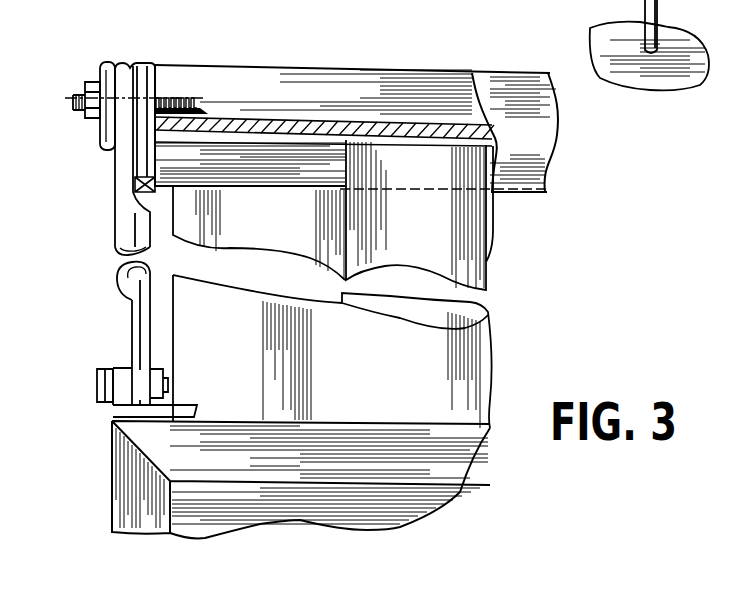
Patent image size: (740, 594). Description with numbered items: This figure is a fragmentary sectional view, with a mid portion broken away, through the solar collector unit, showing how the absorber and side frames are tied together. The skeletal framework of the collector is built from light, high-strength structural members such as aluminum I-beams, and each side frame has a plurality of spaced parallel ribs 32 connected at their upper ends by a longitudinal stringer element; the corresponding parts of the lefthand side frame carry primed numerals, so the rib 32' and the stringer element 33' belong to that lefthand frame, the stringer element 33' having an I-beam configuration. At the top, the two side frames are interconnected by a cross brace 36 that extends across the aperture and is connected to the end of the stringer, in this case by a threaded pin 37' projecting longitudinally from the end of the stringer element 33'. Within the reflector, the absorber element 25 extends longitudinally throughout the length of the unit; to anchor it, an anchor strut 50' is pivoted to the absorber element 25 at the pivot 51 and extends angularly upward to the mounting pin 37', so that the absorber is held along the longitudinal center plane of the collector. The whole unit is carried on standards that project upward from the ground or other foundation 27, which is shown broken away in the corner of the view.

The absorber element 25 is at (358, 433).
The foundation 27 is at (605, 33).
The rib 32 is at (357, 351).
The rib 32' is at (362, 215).
The stringer element 33' is at (380, 117).
The cross brace 36 is at (100, 68).
The threaded pin 37' is at (121, 82).
The anchor strut 50' is at (121, 203).
The pivot 51 is at (97, 386).